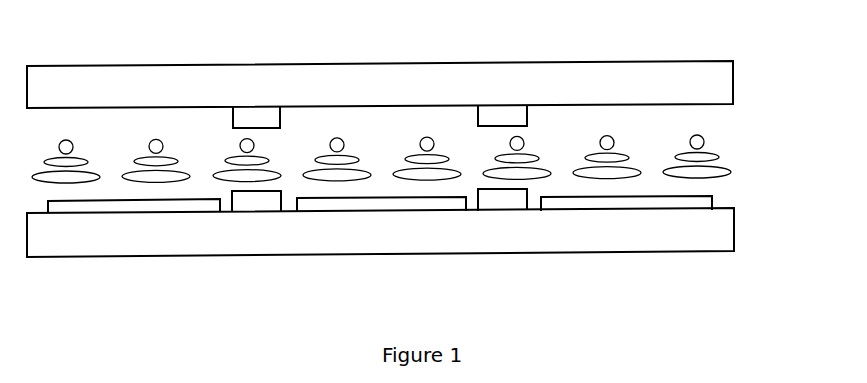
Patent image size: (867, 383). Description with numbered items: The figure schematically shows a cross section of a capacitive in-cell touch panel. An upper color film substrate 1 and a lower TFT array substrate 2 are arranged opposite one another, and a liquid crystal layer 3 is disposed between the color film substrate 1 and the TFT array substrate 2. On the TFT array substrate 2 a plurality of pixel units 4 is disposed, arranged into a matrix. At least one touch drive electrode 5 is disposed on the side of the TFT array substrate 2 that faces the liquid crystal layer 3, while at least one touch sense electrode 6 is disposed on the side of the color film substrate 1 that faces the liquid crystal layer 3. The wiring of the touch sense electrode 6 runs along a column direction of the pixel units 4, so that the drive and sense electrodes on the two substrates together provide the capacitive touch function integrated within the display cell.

The color film substrate 1 is at (408, 58).
The TFT array substrate 2 is at (409, 255).
The liquid crystal layer 3 is at (410, 145).
The pixel units 4 is at (380, 248).
The touch drive electrode 5 is at (379, 244).
The touch sense electrode 6 is at (380, 77).